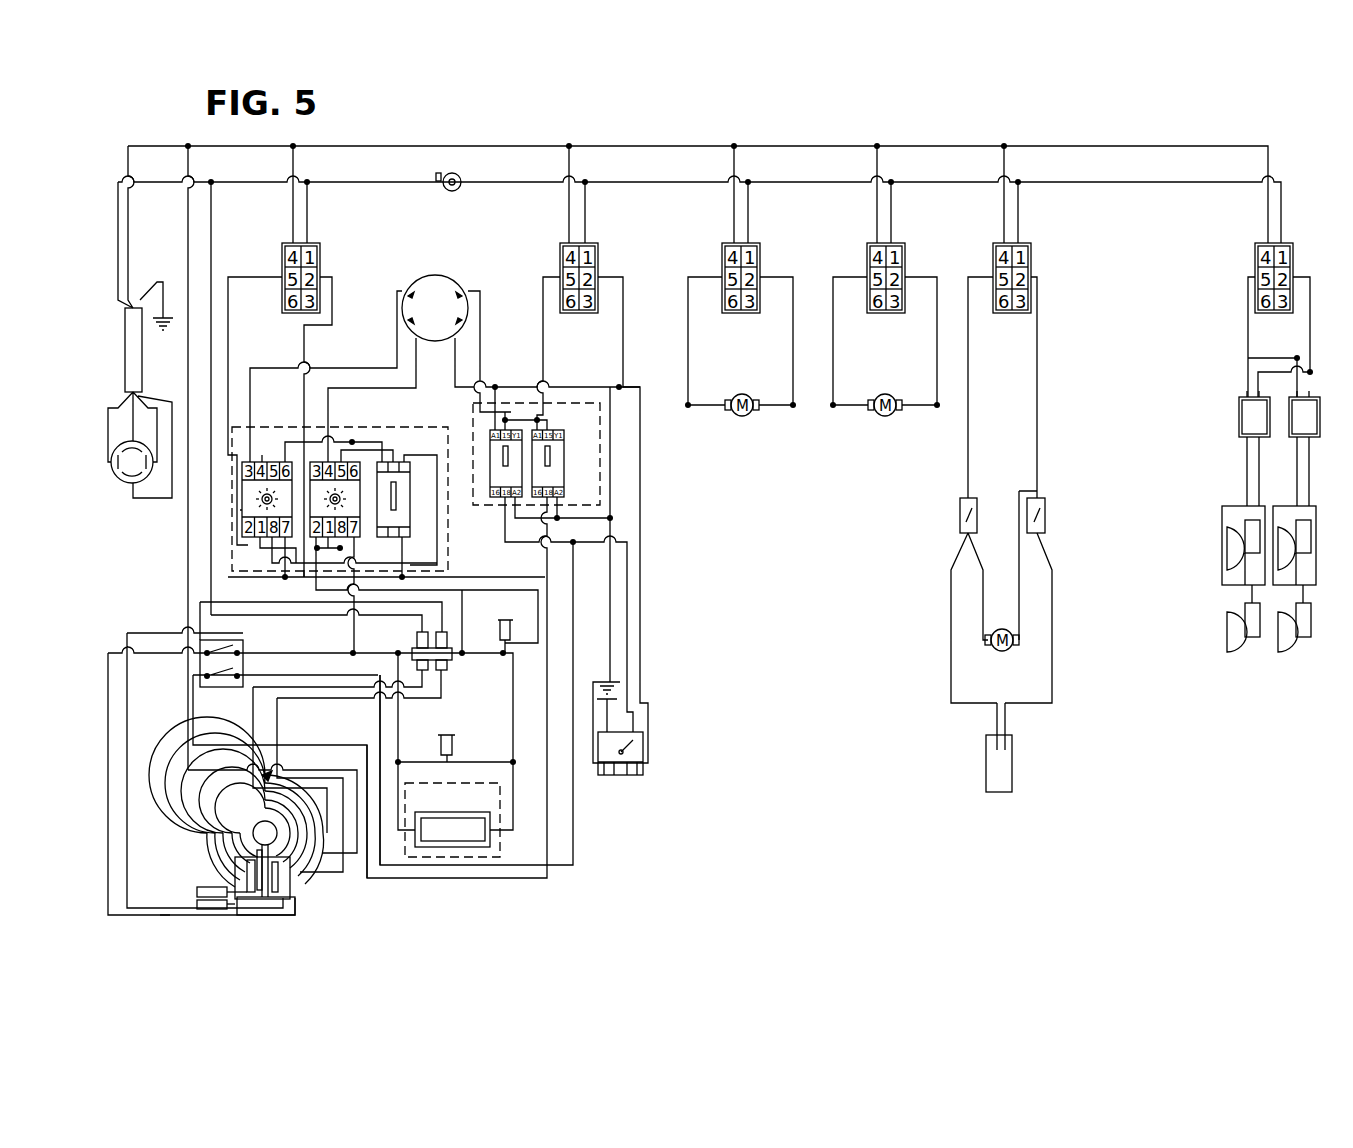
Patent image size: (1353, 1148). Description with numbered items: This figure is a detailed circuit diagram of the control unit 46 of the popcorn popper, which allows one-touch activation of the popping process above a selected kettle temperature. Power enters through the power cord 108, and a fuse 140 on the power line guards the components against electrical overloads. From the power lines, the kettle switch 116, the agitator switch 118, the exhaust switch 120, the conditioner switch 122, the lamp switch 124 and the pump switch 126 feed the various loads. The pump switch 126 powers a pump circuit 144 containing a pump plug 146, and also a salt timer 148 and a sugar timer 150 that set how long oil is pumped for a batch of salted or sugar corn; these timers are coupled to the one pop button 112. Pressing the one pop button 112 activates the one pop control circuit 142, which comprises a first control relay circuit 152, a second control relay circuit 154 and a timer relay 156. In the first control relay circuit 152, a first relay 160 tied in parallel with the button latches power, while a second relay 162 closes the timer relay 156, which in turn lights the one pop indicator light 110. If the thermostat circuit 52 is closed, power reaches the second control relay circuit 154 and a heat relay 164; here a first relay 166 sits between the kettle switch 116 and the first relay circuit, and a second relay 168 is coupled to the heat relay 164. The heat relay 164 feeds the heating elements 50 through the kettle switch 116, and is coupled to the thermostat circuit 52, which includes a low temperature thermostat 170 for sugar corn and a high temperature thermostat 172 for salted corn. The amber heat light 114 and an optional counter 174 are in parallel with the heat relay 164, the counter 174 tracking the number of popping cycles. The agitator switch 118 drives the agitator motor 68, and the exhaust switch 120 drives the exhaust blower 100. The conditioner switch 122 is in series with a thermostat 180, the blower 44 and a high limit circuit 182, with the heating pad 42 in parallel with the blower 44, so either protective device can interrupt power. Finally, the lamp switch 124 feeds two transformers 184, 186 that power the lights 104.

The control unit 46 is at (656, 120).
The fuse 140 is at (458, 172).
The power cord 108 is at (124, 325).
The kettle switch 116 is at (322, 260).
The one pop button 112 is at (455, 280).
The pump switch 126 is at (600, 262).
The agitator switch 118 is at (762, 262).
The exhaust switch 120 is at (906, 262).
The conditioner switch 122 is at (1033, 262).
The lamp switch 124 is at (1254, 262).
The first relay 160 is at (262, 455).
The one pop control circuit 142 is at (232, 430).
The second relay 162 is at (280, 462).
The first relay 166 is at (348, 446).
The second relay 168 is at (385, 462).
The first control relay circuit 152 is at (240, 510).
The second control relay circuit 154 is at (304, 570).
The pump circuit 144 is at (603, 483).
The salt timer 148 is at (490, 470).
The sugar timer 150 is at (549, 420).
The timer relay 156 is at (460, 542).
The agitator motor 68 is at (738, 418).
The exhaust blower 100 is at (880, 418).
The high limit circuit 182 is at (963, 500).
The thermostat 180 is at (1040, 500).
The blower 44 is at (1010, 653).
The heating pad 42 is at (1012, 750).
The transformer 184 is at (1240, 400).
The transformer 186 is at (1316, 412).
The lights 104 is at (1232, 540).
The one pop indicator light 110 is at (496, 630).
The heat relay 164 is at (452, 664).
The amber heat light 114 is at (455, 745).
The pump plug 146 is at (645, 750).
The counter 174 is at (430, 848).
The heating elements 50 is at (305, 865).
The high temperature thermostat 172 is at (212, 887).
The low temperature thermostat 170 is at (200, 903).
The thermostat circuit 52 is at (165, 918).